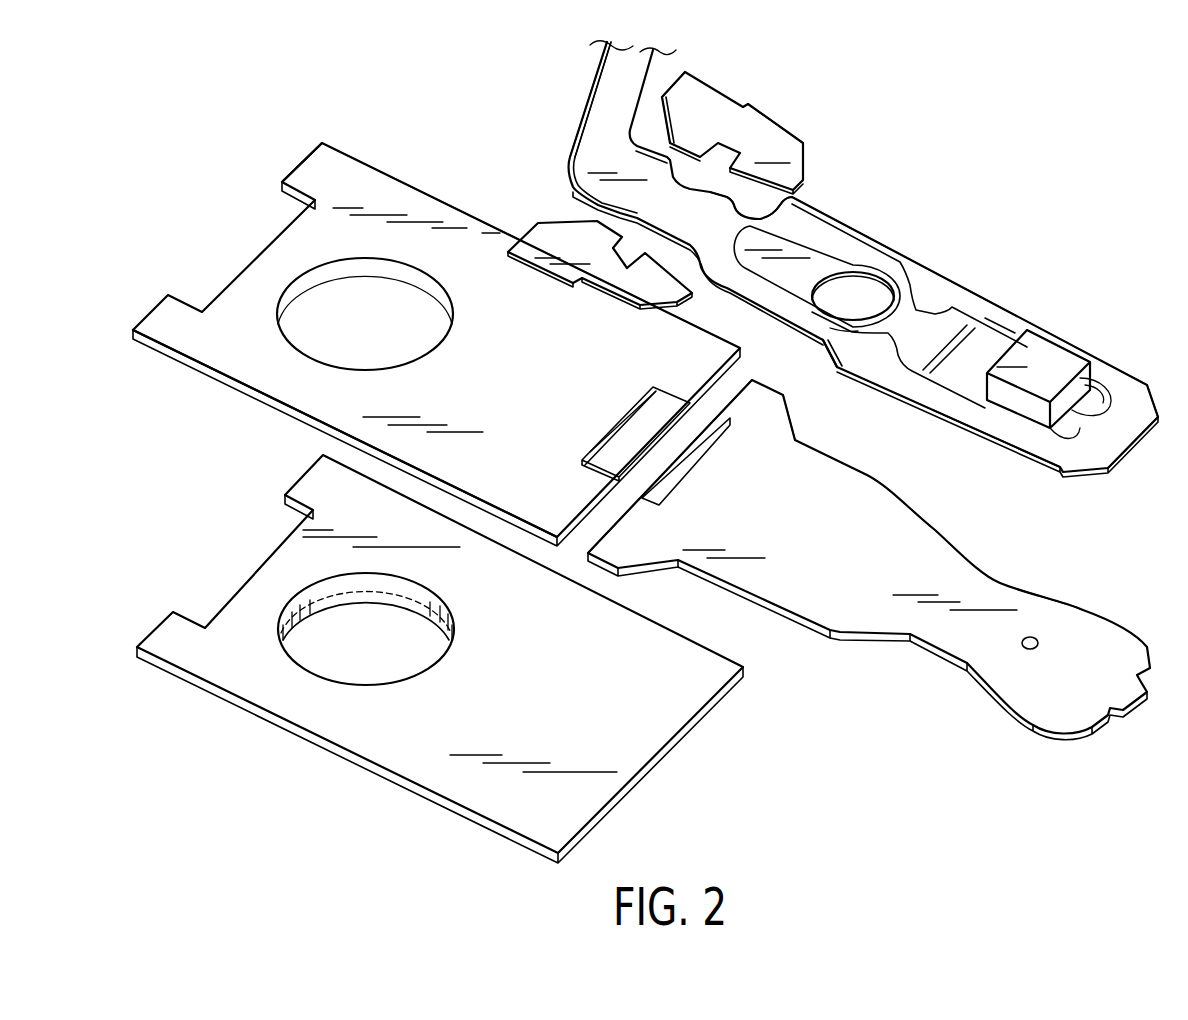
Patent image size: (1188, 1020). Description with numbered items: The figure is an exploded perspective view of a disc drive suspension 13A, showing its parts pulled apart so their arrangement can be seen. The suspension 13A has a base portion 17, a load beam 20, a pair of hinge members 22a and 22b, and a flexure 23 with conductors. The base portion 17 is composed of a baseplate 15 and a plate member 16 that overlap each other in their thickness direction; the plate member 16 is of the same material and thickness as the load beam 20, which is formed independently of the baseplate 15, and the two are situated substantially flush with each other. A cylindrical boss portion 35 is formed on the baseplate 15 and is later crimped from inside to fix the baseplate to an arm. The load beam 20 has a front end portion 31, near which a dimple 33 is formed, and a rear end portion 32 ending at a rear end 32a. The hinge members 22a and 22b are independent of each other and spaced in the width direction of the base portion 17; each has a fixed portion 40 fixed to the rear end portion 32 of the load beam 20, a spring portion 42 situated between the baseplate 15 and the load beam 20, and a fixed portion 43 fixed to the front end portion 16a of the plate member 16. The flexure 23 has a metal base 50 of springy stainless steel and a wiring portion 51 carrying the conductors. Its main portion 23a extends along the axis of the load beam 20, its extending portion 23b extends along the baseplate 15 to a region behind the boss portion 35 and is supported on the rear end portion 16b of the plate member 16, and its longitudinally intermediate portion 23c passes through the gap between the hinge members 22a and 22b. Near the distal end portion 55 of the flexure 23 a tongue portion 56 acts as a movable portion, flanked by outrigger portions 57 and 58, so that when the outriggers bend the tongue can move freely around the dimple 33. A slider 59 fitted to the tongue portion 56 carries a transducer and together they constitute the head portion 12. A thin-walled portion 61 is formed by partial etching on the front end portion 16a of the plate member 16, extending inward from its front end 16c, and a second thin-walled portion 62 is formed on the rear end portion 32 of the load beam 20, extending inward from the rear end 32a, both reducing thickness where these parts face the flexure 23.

The head portion 12 is at (1090, 346).
The suspension 13A is at (1042, 138).
The baseplate 15 is at (333, 723).
The plate member 16 is at (267, 377).
The front end portion 16a is at (525, 537).
The rear end portion 16b is at (313, 170).
The front end 16c is at (667, 442).
The base portion 17 is at (432, 168).
The load beam 20 is at (895, 620).
The hinge member 22a is at (820, 150).
The hinge member 22b is at (608, 315).
The flexure with conductors 23 is at (848, 257).
The main portion 23a is at (862, 360).
The extending portion 23b is at (617, 67).
The longitudinally intermediate portion 23c is at (700, 213).
The front end portion 31 is at (1113, 650).
The rear end portion 32 is at (632, 532).
The rear end 32a is at (690, 437).
The dimple 33 is at (1030, 637).
The cylindrical boss portion 35 is at (357, 603).
The fixed portion 40 is at (785, 150).
The spring portion 42 is at (763, 140).
The fixed portion 43 is at (682, 90).
The metal base 50 is at (597, 95).
The wiring portion 51 is at (595, 147).
The distal end portion 55 is at (1142, 402).
The tongue portion 56 is at (928, 413).
The outrigger portion 57 is at (1010, 317).
The outrigger portion 58 is at (963, 417).
The slider 59 is at (1050, 355).
The thin-walled portion 61 is at (602, 458).
The thin-walled portion 62 is at (673, 477).